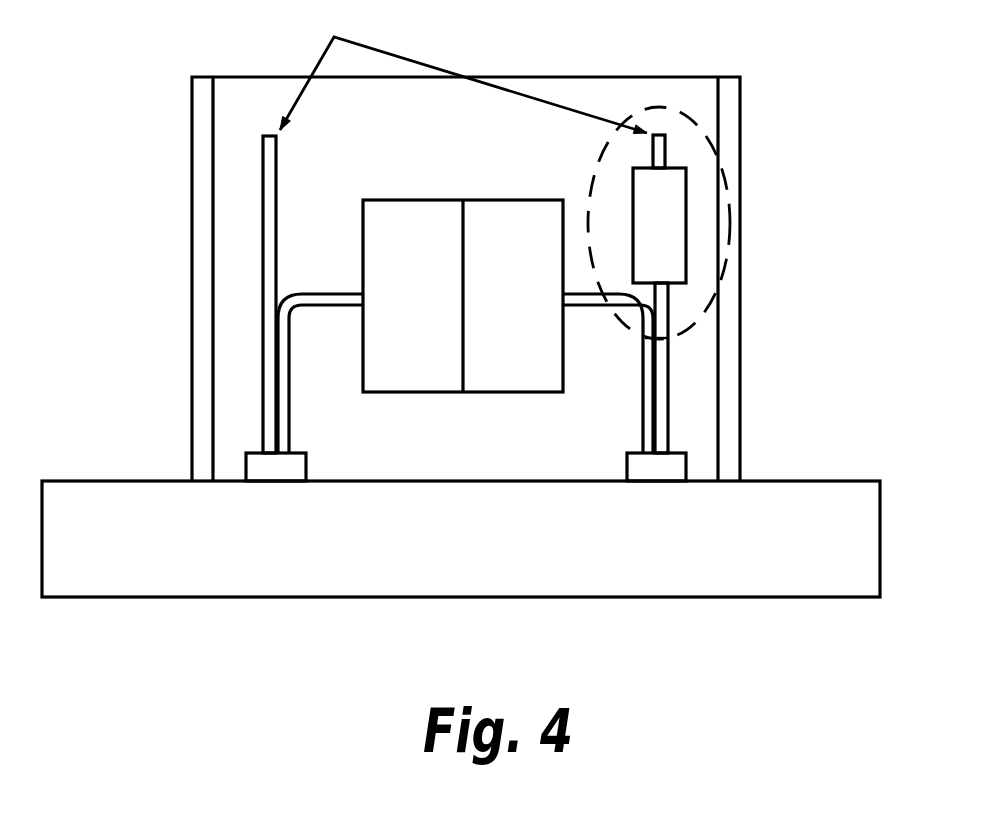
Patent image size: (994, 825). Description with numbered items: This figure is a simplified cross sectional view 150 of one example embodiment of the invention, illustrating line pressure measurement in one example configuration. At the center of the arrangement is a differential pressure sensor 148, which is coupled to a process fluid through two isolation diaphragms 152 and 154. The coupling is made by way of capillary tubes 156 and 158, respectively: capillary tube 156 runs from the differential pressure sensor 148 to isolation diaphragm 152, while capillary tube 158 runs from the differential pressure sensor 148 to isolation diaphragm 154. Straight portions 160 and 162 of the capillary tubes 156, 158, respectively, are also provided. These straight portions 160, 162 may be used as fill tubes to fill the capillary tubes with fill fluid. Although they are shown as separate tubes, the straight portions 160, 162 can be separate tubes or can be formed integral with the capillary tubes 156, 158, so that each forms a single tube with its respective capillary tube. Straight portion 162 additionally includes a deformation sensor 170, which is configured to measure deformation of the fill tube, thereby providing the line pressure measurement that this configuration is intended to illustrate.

The differential pressure sensor 148 is at (477, 177).
The simplified cross sectional view 150 is at (133, 125).
The isolation diaphragm 152 is at (245, 463).
The isolation diaphragm 154 is at (687, 458).
The capillary tube 156 is at (272, 367).
The capillary tube 158 is at (660, 388).
The straight portion 160 is at (262, 219).
The straight portion 162 is at (665, 148).
The deformation sensor 170 is at (808, 197).